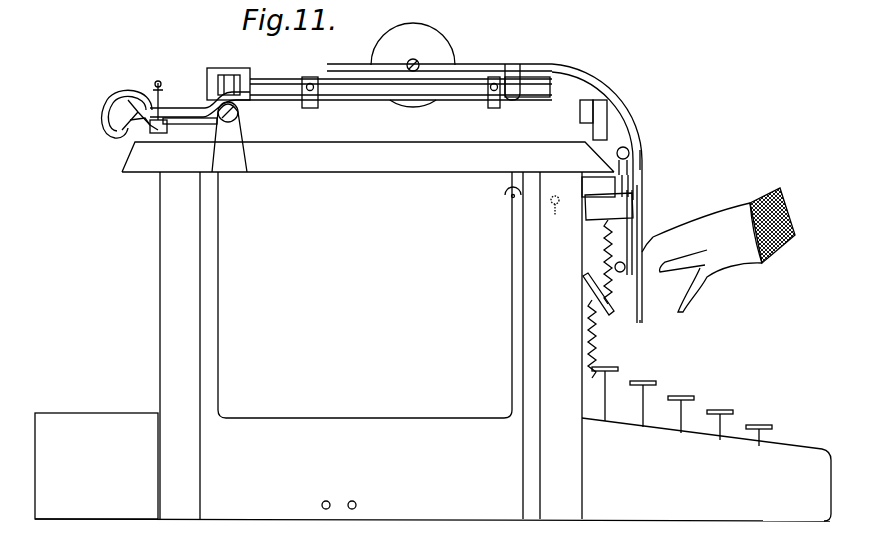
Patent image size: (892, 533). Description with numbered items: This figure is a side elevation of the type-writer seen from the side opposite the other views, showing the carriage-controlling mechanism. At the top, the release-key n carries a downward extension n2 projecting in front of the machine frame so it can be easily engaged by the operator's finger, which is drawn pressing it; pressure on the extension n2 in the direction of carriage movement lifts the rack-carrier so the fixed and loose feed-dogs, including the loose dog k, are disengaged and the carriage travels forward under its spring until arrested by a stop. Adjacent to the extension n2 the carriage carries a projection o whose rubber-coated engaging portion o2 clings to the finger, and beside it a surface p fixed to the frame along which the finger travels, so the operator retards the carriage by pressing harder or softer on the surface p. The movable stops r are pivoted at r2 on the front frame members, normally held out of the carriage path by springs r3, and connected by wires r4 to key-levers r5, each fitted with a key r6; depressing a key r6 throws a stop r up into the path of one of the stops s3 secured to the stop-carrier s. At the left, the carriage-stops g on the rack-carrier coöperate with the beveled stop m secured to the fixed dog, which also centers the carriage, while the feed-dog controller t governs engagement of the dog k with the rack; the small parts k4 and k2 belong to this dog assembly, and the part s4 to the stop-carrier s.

The loose feed-dog k is at (165, 111).
The pin k4 is at (158, 86).
The clip k2 is at (128, 136).
The coöperating stop m is at (147, 101).
The feed-dog controller t is at (146, 136).
The carriage-stops g is at (133, 127).
The release-key n is at (512, 63).
The stop-carrier s is at (621, 125).
The screw bracket s4 is at (643, 168).
The stops s3 is at (630, 184).
The movable stops r is at (609, 285).
The pivot r2 is at (533, 208).
The projection o is at (628, 250).
The engaging portion o2 is at (598, 268).
The surface p is at (599, 305).
The extension n2 is at (641, 316).
The wires r4 is at (530, 321).
The springs r3 is at (605, 382).
The key r6 is at (657, 383).
The key-levers r5 is at (768, 446).